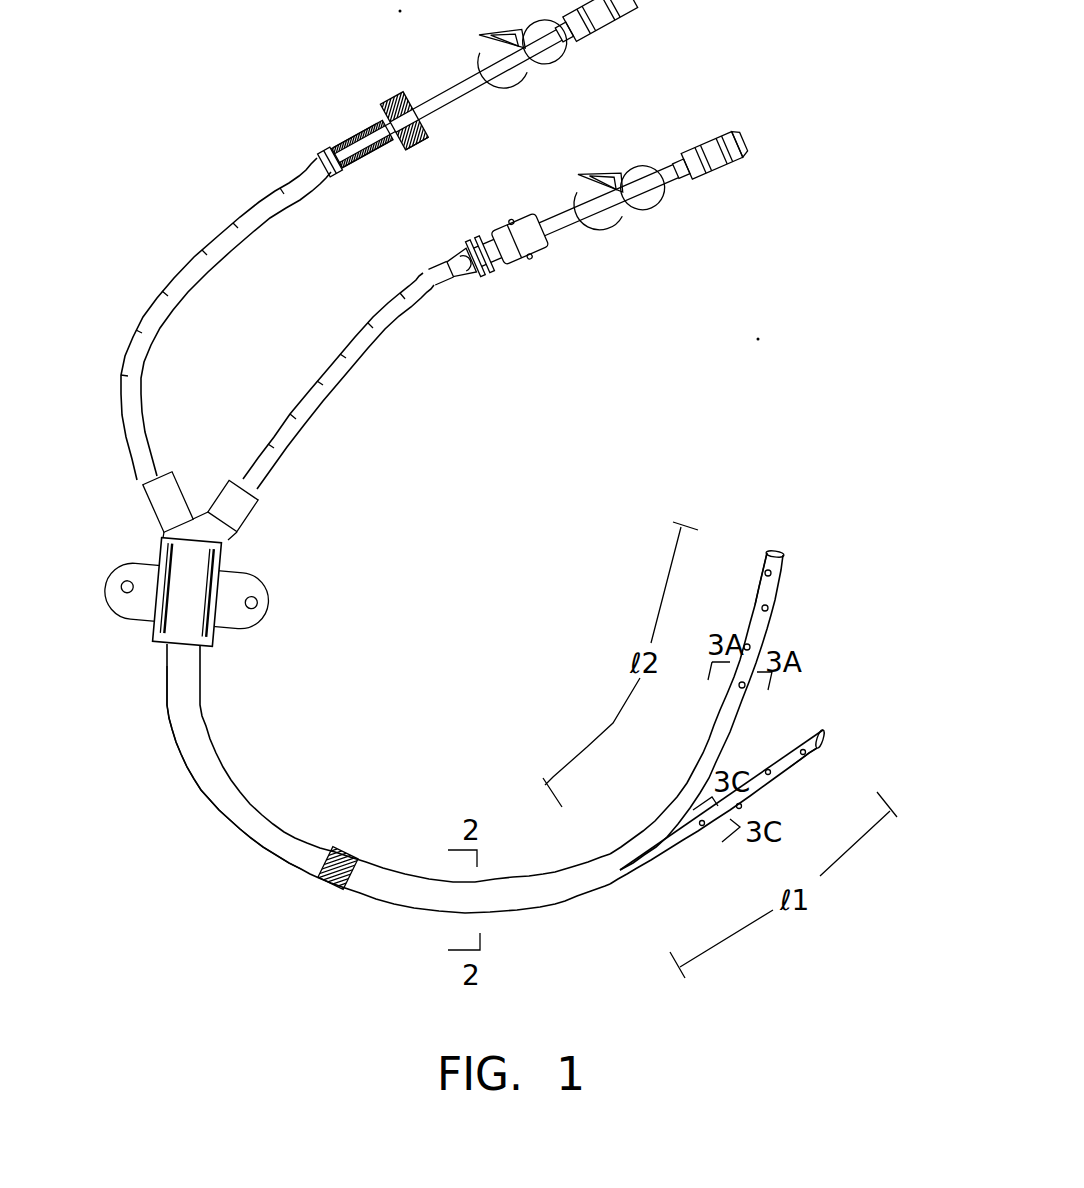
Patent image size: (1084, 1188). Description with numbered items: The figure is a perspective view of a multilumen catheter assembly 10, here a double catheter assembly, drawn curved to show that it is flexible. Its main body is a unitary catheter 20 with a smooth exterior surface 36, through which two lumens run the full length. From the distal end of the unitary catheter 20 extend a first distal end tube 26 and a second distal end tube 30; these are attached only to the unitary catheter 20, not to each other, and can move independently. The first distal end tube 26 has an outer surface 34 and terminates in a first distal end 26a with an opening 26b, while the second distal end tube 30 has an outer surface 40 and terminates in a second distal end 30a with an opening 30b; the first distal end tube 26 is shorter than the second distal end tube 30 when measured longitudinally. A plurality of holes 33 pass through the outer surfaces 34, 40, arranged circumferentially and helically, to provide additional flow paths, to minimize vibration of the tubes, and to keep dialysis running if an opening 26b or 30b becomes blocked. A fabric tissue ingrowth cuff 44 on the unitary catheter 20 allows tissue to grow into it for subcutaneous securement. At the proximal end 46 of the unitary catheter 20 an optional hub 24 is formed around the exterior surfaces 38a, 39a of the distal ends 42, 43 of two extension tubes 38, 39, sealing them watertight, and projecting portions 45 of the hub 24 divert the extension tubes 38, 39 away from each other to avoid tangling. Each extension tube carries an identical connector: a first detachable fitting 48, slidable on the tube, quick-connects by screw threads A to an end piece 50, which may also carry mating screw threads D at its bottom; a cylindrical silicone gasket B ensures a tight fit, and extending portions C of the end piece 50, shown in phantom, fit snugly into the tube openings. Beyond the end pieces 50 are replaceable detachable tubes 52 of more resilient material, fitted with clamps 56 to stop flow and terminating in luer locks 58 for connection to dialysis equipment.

The multilumen catheter assembly 10 is at (385, 506).
The unitary catheter 20 is at (387, 867).
The hub 24 is at (200, 620).
The first distal end tube 26 is at (750, 786).
The first distal end 26a is at (815, 727).
The opening 26b is at (823, 728).
The second distal end tube 30 is at (723, 678).
The second distal end 30a is at (770, 550).
The opening 30b is at (780, 548).
The holes 33 is at (750, 647).
The outer surface 34 is at (682, 842).
The exterior surface 36 is at (228, 797).
The extension tube 38 is at (198, 272).
The exterior surface 38a is at (148, 303).
The extension tube 39 is at (363, 350).
The exterior surface 39a is at (333, 380).
The outer surface 40 is at (712, 745).
The distal end 42 is at (170, 476).
The distal end 43 is at (258, 488).
The fabric tissue ingrowth cuff 44 is at (337, 883).
The projecting portions 45 is at (257, 517).
The proximal end 46 is at (163, 647).
The first detachable fitting 48 is at (352, 163).
The end piece 50 is at (393, 93).
The detachable tubes 52 is at (453, 90).
The clamps 56 is at (633, 157).
The luer locks 58 is at (618, 17).
The screw threads A is at (362, 118).
The gasket B is at (377, 153).
The extending portions C is at (342, 140).
The mating screw threads D is at (397, 142).